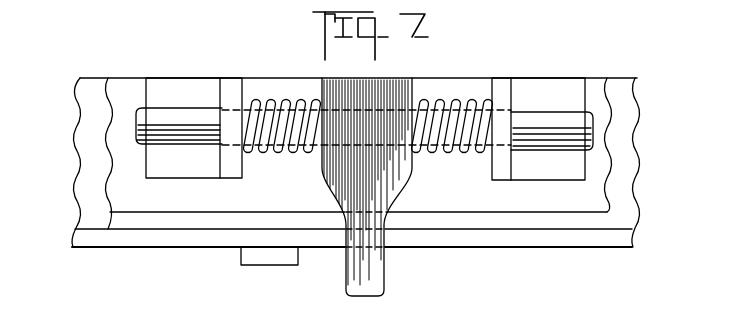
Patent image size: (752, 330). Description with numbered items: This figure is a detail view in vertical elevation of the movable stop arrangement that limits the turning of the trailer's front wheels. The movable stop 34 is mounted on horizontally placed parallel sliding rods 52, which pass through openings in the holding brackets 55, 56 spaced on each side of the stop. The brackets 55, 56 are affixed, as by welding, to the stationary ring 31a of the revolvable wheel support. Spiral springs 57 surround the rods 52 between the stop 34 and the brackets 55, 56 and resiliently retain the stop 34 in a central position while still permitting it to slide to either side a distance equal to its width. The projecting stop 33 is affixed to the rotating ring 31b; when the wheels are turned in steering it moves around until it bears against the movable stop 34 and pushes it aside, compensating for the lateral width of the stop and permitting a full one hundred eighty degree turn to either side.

The stationary ring 31a is at (590, 225).
The rotating ring 31b is at (509, 238).
The stop 33 is at (273, 261).
The movable stop 34 is at (366, 289).
The rod 52 is at (155, 118).
The holding bracket 55 is at (229, 89).
The holding bracket 56 is at (497, 90).
The spiral spring 57 is at (443, 106).